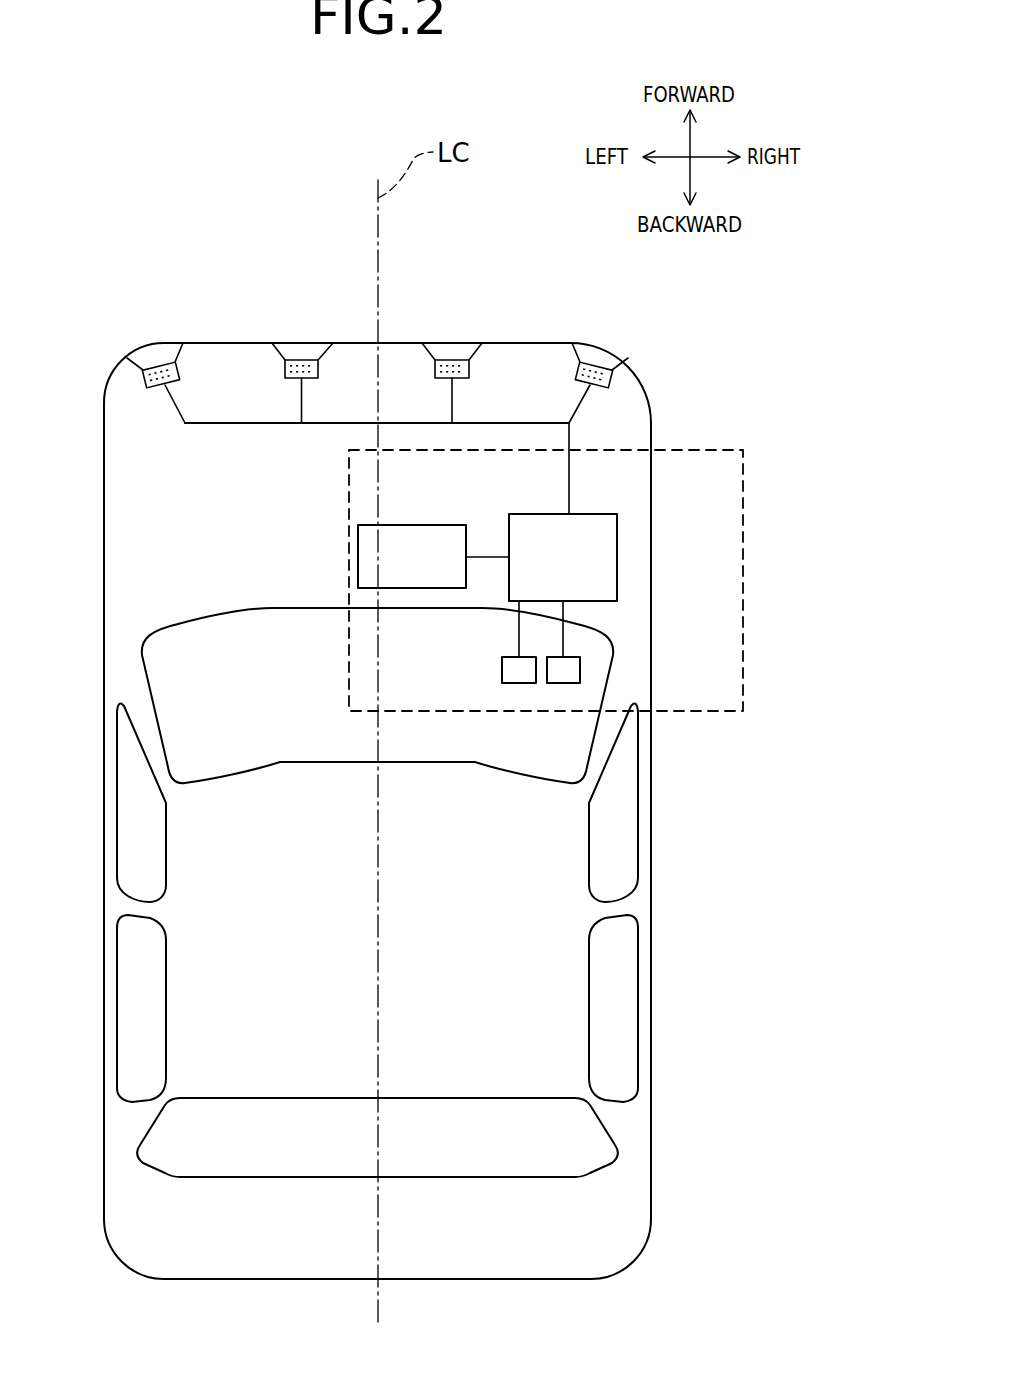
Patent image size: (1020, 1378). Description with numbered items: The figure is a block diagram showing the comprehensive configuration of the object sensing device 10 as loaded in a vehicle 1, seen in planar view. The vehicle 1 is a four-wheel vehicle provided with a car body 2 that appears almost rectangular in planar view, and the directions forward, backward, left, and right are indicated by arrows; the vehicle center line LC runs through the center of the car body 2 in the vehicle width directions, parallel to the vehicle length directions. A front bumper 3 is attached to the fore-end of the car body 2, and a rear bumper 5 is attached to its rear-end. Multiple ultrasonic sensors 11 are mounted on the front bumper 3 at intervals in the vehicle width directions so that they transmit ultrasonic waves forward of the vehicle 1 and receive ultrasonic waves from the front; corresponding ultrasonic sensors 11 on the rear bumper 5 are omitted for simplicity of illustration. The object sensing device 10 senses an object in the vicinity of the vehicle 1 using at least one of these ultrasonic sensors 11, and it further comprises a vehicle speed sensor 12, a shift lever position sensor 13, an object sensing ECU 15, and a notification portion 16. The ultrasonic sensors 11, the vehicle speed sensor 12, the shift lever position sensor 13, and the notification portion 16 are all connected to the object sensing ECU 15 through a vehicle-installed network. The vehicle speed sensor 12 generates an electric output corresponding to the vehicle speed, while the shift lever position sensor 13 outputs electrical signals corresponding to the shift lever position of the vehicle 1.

The vehicle 1 is at (697, 828).
The car body 2 is at (638, 897).
The front bumper 3 is at (647, 383).
The rear bumper 5 is at (633, 1258).
The object sensing device 10 is at (698, 450).
The ultrasonic sensor 11 is at (141, 356).
The vehicle speed sensor 12 is at (502, 670).
The shift lever position sensor 13 is at (580, 668).
The object sensing ECU 15 is at (618, 553).
The notification portion 16 is at (412, 525).